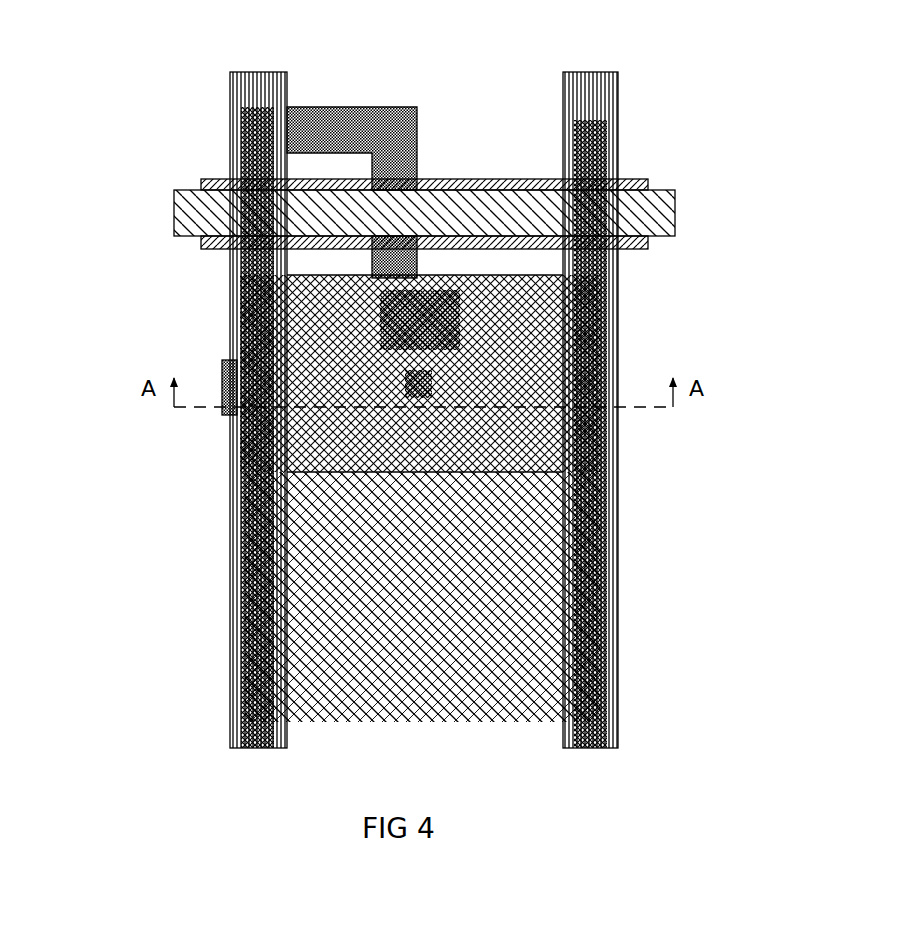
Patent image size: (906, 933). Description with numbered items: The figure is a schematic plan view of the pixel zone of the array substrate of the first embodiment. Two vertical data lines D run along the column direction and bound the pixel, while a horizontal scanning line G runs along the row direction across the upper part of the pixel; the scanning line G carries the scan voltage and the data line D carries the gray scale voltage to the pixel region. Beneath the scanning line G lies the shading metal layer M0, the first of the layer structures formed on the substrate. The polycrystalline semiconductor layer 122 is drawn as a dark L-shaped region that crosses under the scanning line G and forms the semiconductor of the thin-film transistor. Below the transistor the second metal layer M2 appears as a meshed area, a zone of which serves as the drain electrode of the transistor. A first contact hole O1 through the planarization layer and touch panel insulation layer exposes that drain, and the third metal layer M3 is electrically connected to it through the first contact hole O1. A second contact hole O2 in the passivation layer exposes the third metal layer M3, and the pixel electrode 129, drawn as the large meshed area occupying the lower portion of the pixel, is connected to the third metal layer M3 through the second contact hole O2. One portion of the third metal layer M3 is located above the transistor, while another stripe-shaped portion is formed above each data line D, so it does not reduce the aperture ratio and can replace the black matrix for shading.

The third metal layer M3 is at (247, 92).
The data line D is at (247, 150).
The scanning line G is at (185, 207).
The polycrystalline semiconductor layer 122 is at (400, 131).
The shading metal layer M0 is at (640, 183).
The first contact hole O1 is at (384, 313).
The second contact hole O2 is at (409, 333).
The second metal layer M2 is at (520, 332).
The pixel electrode 129 is at (535, 595).